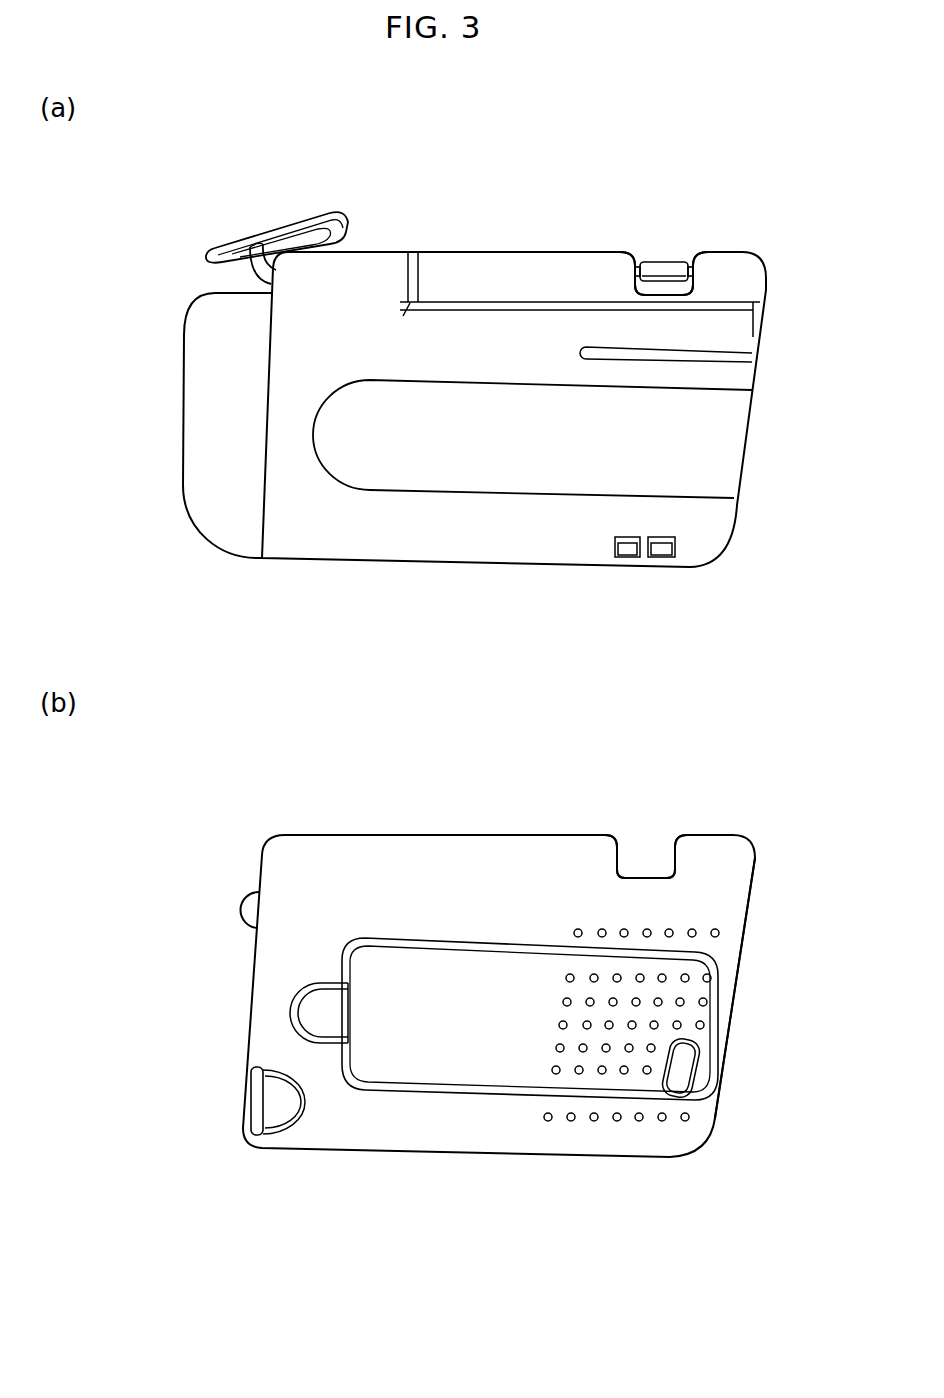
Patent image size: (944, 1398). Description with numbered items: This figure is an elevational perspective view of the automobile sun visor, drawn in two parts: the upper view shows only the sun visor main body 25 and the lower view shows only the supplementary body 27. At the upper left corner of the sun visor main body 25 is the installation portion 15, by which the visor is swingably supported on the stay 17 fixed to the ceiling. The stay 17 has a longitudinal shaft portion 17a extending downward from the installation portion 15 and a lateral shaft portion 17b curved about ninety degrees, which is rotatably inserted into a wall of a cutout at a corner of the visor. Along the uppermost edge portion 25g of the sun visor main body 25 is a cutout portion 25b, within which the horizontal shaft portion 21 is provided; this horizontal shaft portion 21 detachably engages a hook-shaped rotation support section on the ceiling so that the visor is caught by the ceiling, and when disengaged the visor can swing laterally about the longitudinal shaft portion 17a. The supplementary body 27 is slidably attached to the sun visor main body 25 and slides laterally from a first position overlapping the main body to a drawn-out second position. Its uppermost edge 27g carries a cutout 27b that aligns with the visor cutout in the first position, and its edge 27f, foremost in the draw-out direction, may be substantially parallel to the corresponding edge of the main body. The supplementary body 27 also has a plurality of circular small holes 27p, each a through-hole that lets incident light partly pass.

The installation portion 15 is at (230, 223).
The stay 17 is at (208, 255).
The longitudinal shaft portion 17a is at (215, 250).
The lateral shaft portion 17b is at (258, 278).
The horizontal shaft portion 21 is at (652, 262).
The sun visor main body 25 is at (400, 557).
The uppermost edge portion 25g is at (497, 250).
The cutout portion 25b is at (672, 294).
The supplementary body 27 is at (403, 1148).
The uppermost edge 27g is at (497, 834).
The cutout 27b is at (636, 878).
The edge 27f is at (734, 1015).
The small holes 27p is at (580, 1074).